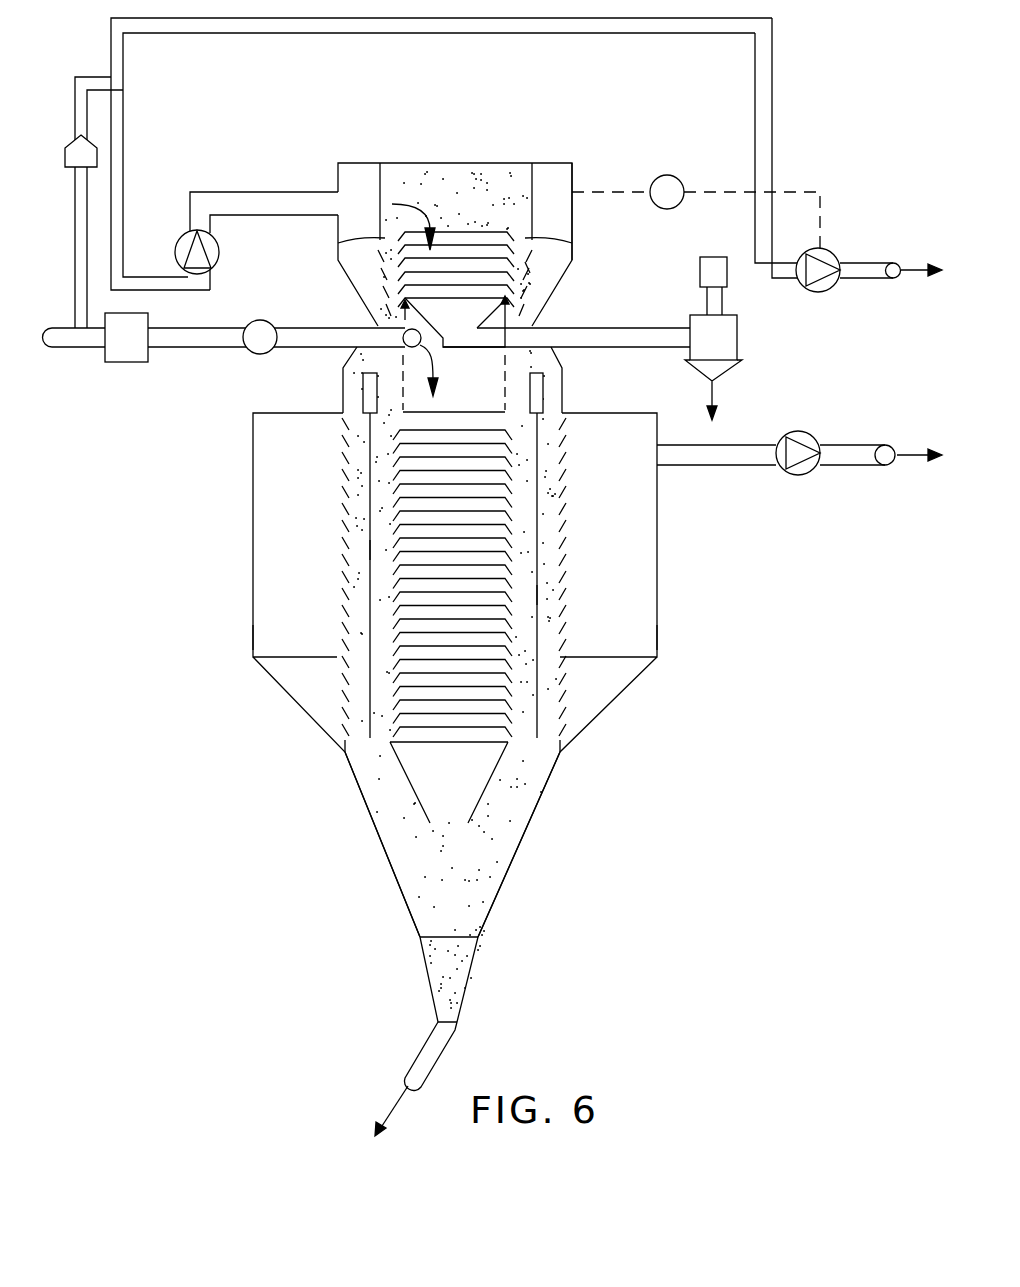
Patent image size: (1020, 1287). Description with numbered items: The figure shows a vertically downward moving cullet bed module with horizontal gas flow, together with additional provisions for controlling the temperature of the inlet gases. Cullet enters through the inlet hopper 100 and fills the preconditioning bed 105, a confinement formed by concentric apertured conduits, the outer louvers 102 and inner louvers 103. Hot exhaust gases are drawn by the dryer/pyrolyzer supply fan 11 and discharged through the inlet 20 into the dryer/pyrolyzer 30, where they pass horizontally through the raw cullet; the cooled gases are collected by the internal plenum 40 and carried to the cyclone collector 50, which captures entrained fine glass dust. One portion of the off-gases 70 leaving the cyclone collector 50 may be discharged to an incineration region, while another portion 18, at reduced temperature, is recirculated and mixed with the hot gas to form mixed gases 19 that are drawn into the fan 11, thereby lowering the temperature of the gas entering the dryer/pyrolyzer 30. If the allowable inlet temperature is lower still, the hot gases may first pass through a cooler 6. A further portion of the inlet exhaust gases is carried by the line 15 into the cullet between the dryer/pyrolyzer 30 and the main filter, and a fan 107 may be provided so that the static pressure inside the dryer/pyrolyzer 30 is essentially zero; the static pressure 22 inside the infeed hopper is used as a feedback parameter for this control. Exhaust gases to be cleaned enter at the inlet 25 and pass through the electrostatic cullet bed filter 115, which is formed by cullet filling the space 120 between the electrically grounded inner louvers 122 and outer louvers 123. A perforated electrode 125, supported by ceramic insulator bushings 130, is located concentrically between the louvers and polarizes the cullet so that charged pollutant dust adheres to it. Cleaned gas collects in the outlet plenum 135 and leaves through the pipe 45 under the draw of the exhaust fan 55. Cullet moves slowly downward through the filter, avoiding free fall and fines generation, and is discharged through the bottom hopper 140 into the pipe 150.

The cooler 6 is at (125, 363).
The dryer/pyrolyzer supply fan 11 is at (190, 233).
The inlet exhaust gas line 15 is at (232, 328).
The portion of cooled pyrolyzer off-gases 18 is at (772, 148).
The mixed gases 19 is at (123, 113).
The inlet 20 is at (335, 200).
The static pressure 22 is at (700, 188).
The inlet 25 is at (380, 325).
The dryer/pyrolyzer 30 is at (570, 190).
The internal plenum 40 is at (457, 303).
The outlet pipe 45 is at (722, 447).
The cyclone collector 50 is at (737, 333).
The exhaust fan 55 is at (818, 436).
The portion of off-gases 70 is at (868, 263).
The inlet hopper 100 is at (403, 162).
The outer louvers 102 is at (530, 250).
The inner louvers 103 is at (568, 243).
The preconditioning bed 105 is at (530, 273).
The fan 107 is at (262, 320).
The electrostatic cullet bed filter 115 is at (578, 421).
The space 120 is at (356, 403).
The inner louvers 122 is at (512, 432).
The outer louvers 123 is at (570, 515).
The electrode 125 is at (537, 594).
The ceramic insulator bushings 130 is at (543, 385).
The outlet plenum 135 is at (695, 636).
The bottom hopper 140 is at (505, 880).
The pipe 150 is at (443, 1046).